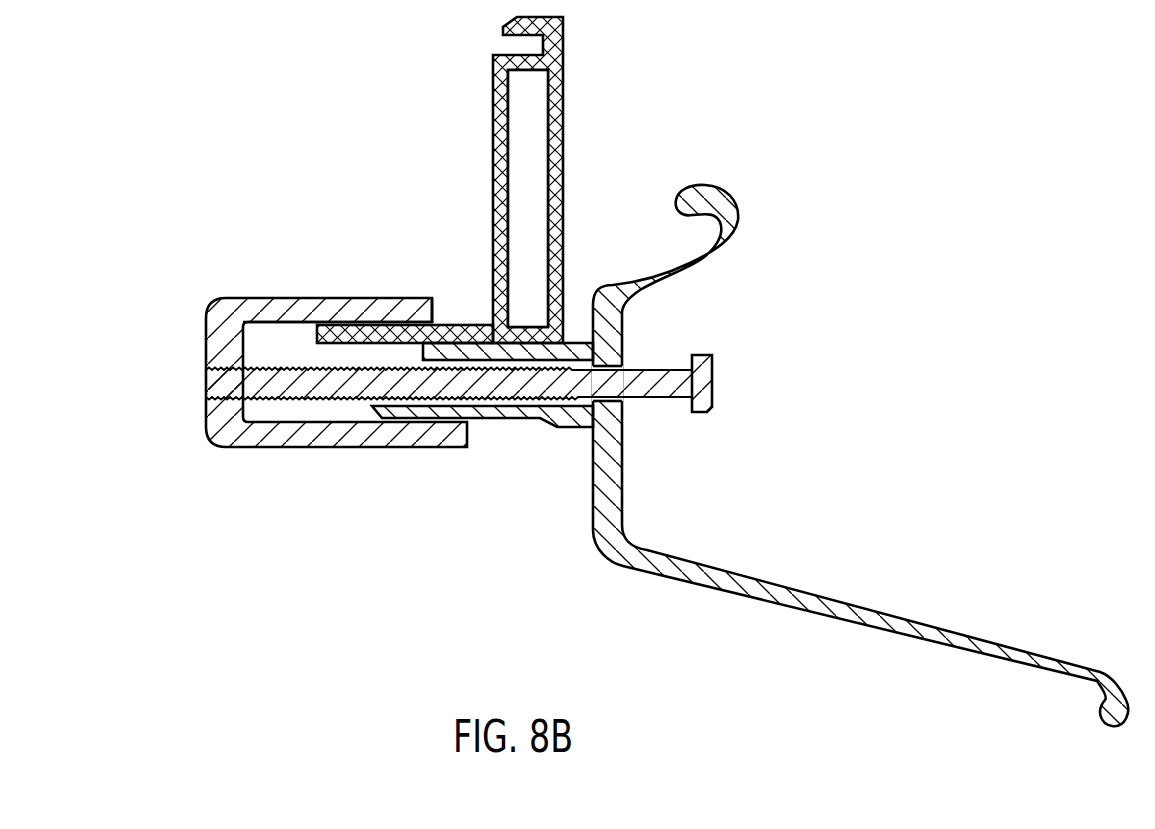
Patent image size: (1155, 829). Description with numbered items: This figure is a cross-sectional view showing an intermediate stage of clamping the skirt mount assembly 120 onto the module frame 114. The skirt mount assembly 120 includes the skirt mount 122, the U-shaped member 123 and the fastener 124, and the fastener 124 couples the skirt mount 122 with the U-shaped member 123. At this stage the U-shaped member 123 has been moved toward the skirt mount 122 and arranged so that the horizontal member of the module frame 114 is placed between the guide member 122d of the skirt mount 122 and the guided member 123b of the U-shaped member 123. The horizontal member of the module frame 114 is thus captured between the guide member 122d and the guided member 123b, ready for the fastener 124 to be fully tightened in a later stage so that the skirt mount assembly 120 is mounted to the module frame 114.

The module frame 114 is at (472, 86).
The skirt mount assembly 120 is at (767, 42).
The skirt mount 122 is at (592, 576).
The guide member 122d is at (412, 340).
The U-shaped member 123 is at (268, 280).
The guided member 123b is at (345, 298).
The fastener 124 is at (763, 392).